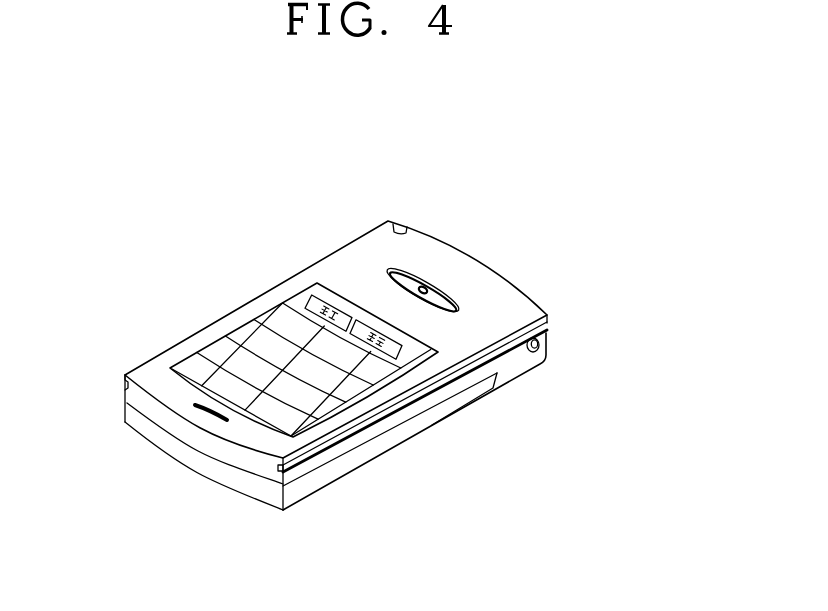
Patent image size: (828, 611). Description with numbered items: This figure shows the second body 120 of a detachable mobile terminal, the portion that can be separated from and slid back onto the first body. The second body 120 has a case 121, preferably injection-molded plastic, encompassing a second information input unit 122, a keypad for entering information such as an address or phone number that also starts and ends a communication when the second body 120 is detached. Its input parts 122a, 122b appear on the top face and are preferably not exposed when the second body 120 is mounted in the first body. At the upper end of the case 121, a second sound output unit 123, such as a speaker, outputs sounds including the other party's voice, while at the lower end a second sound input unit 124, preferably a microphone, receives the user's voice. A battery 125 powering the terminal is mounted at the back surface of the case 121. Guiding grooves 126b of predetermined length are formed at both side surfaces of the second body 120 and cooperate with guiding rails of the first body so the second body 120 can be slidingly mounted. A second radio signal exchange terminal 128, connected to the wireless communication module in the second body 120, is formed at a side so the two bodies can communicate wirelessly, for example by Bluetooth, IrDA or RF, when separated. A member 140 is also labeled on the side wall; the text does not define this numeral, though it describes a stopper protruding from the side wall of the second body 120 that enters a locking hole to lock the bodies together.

The second body 120 is at (433, 448).
The case 121 is at (180, 348).
The second information input unit 122 is at (257, 311).
The input part 122a is at (308, 298).
The input part 122b is at (408, 360).
The second sound output unit 123 is at (410, 278).
The second sound input unit 124 is at (195, 410).
The battery 125 is at (352, 465).
The guiding grooves 126b is at (503, 368).
The second radio signal exchange terminal 128 is at (402, 227).
The side button 140 is at (546, 346).